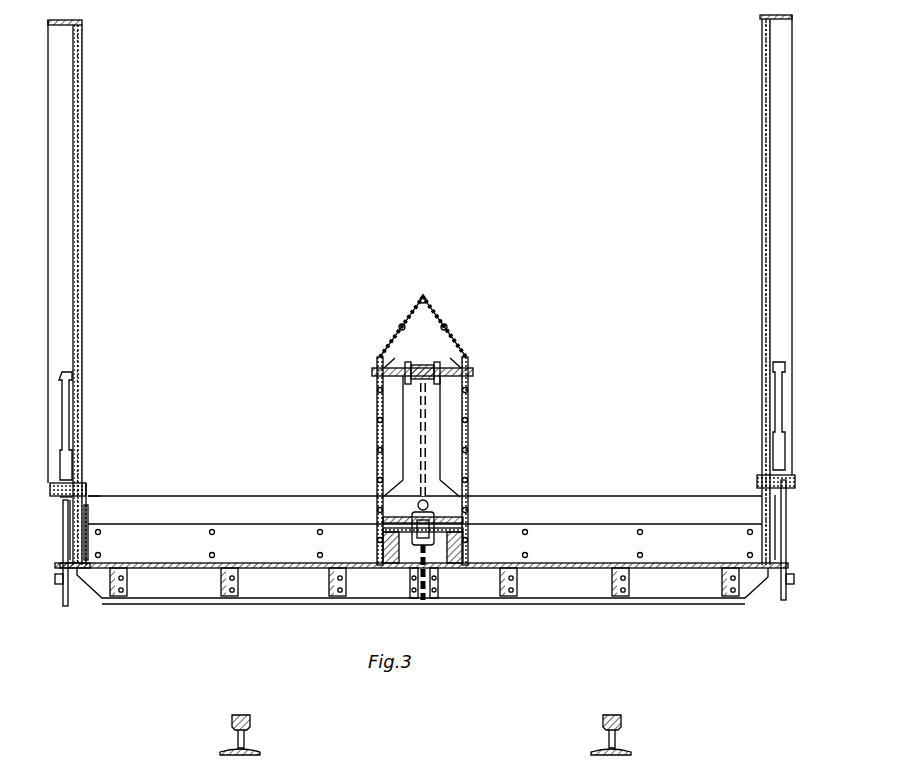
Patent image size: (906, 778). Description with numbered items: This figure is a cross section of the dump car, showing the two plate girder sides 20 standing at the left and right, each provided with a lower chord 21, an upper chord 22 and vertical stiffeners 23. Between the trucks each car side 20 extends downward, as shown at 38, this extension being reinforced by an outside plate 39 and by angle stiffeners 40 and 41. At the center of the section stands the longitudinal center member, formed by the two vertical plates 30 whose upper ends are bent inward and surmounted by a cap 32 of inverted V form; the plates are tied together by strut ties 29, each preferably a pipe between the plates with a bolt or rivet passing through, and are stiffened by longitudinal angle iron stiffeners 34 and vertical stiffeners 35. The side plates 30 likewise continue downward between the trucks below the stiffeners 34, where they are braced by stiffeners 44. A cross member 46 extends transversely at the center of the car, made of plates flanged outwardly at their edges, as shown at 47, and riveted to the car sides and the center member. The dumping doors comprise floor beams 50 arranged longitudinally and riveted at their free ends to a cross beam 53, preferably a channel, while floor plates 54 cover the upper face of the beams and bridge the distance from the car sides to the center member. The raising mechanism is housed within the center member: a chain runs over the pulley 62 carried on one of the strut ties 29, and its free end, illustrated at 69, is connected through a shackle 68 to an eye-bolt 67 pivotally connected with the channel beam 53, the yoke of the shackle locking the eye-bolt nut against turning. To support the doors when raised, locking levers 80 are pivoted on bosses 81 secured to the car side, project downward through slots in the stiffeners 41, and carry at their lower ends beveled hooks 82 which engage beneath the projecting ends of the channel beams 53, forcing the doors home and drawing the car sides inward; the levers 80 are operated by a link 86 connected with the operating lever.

The plate girder side 20 is at (82, 258).
The lower chord 21 is at (56, 485).
The upper chord 22 is at (84, 26).
The vertical stiffeners 23 is at (768, 239).
The strut ties 29 is at (388, 370).
The vertical plates 30 is at (470, 387).
The cap 32 is at (452, 323).
The longitudinal angle iron stiffeners 34 is at (378, 524).
The vertical stiffeners 35 is at (380, 434).
The downward extension of car side 38 is at (92, 498).
The outside plate 39 is at (88, 492).
The angle stiffener 40 is at (62, 497).
The angle stiffener 41 is at (58, 565).
The stiffeners 44 is at (392, 562).
The cross member 46 is at (425, 510).
The outwardly flanged edges 47 is at (470, 492).
The floor beams 50 is at (220, 585).
The cross beam 53 is at (380, 596).
The floor plates 54 is at (265, 566).
The pulley 62 is at (428, 362).
The eye-bolt 67 is at (440, 578).
The shackle 68 is at (438, 501).
The chain end 69 is at (426, 462).
The locking levers 80 is at (69, 520).
The bosses 81 is at (89, 523).
The hooks 82 is at (67, 606).
The link 86 is at (784, 370).